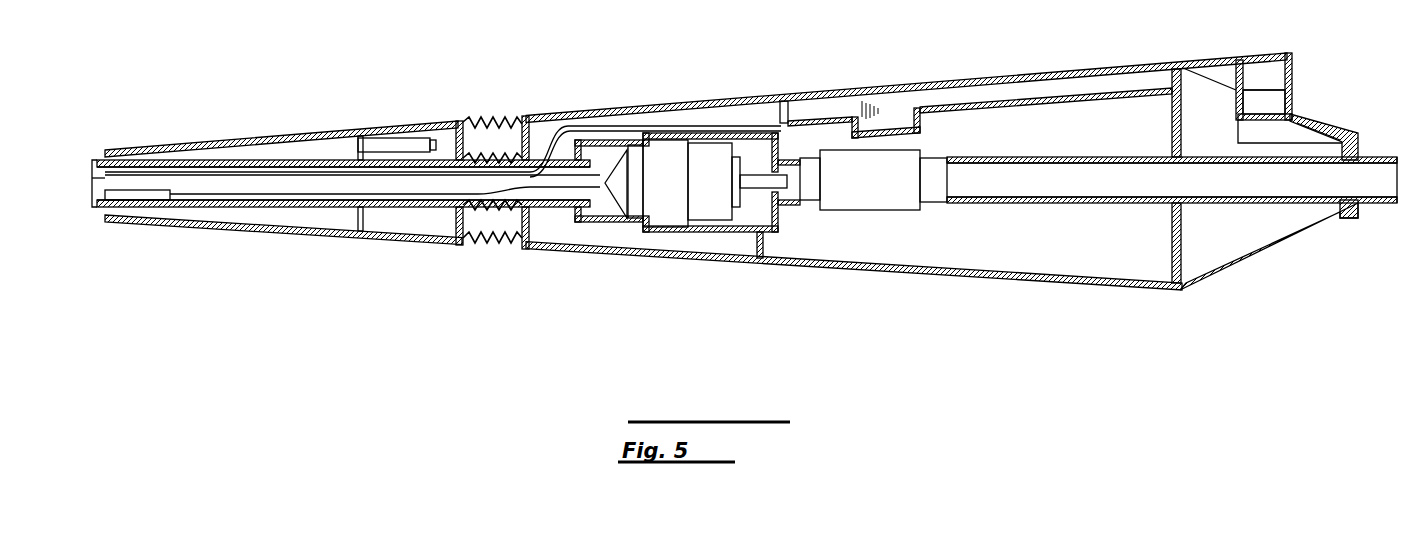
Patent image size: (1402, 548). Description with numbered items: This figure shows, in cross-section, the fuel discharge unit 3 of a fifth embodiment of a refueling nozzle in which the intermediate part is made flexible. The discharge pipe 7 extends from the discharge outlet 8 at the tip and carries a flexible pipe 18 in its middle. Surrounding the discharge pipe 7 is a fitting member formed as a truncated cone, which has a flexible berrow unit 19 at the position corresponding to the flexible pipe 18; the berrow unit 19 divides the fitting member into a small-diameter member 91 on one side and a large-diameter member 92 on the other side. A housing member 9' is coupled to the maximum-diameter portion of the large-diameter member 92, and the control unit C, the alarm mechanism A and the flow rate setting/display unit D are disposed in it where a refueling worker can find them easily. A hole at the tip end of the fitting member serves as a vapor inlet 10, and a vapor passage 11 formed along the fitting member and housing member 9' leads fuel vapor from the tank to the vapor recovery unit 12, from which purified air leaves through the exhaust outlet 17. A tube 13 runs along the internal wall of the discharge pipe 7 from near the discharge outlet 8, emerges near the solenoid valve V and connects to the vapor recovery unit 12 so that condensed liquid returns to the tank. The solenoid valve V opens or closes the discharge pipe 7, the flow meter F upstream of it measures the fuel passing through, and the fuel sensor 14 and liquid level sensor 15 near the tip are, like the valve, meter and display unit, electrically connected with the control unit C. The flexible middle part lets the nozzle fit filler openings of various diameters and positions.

The fuel discharge unit 3 is at (752, 68).
The discharge pipe 7 is at (277, 206).
The discharge outlet 8 is at (90, 182).
The small-diameter member 91 is at (345, 237).
The large-diameter member 92 is at (1015, 283).
The housing member 9' is at (1269, 263).
The vapor inlet 10 is at (103, 160).
The vapor passage 11 is at (297, 148).
The vapor recovery unit 12 is at (897, 100).
The tube 13 is at (220, 177).
The fuel sensor 14 is at (395, 146).
The liquid level sensor 15 is at (142, 199).
The exhaust outlet 17 is at (1137, 68).
The flexible pipe 18 is at (488, 124).
The berrow unit 19 is at (507, 120).
The alarm mechanism A is at (1280, 74).
The control unit C is at (1292, 127).
The flow rate setting/display unit D is at (1280, 100).
The flow meter F is at (875, 195).
The solenoid valve V is at (666, 210).